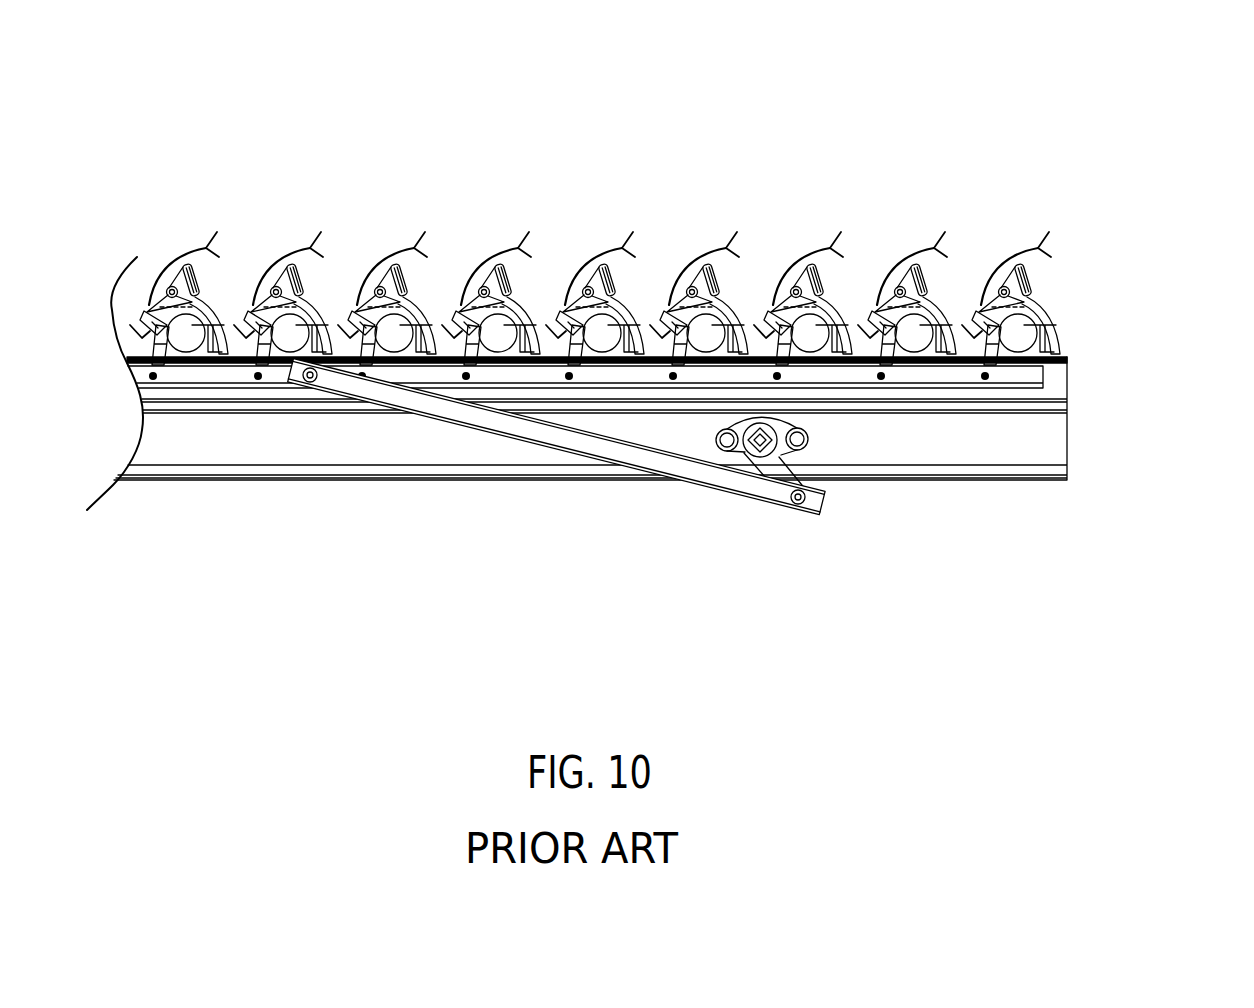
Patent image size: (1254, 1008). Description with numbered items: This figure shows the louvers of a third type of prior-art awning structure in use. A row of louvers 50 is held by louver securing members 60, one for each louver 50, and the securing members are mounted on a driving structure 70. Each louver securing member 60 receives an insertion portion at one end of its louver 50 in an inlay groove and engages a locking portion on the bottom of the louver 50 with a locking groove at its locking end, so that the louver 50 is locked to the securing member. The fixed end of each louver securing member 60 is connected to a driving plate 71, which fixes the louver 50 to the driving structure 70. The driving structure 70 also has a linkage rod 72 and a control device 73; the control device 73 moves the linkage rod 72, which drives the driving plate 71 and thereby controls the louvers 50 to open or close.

The louver 50 is at (290, 250).
The louver securing member 60 is at (312, 280).
The driving structure 70 is at (611, 510).
The driving plate 71 is at (1027, 375).
The linkage rod 72 is at (632, 455).
The control device 73 is at (778, 448).